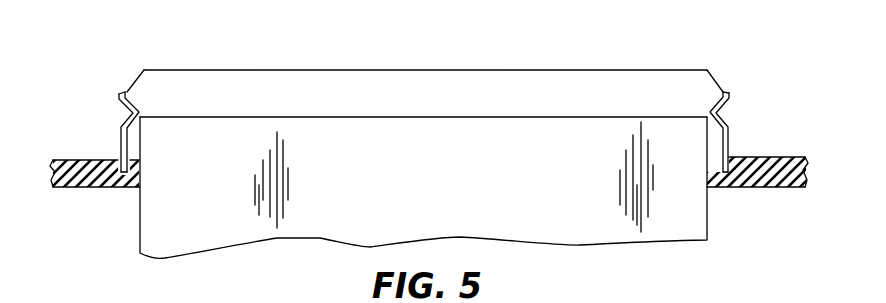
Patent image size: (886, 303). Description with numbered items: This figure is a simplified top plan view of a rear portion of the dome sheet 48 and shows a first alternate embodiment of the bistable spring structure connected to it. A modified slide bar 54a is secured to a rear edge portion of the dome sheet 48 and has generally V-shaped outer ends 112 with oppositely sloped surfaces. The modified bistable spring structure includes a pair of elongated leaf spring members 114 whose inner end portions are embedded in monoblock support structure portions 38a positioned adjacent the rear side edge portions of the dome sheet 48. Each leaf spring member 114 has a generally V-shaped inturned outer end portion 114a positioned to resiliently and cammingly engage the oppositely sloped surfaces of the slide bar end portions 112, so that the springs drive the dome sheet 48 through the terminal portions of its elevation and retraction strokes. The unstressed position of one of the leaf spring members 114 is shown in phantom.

The modified slide bar 54a is at (423, 83).
The dome sheet 48 is at (447, 189).
The monoblock support structure portions 38a is at (77, 188).
The V-shaped outer ends 112 is at (138, 88).
The leaf spring members 114 is at (118, 138).
The inturned outer end portions 114a is at (118, 106).